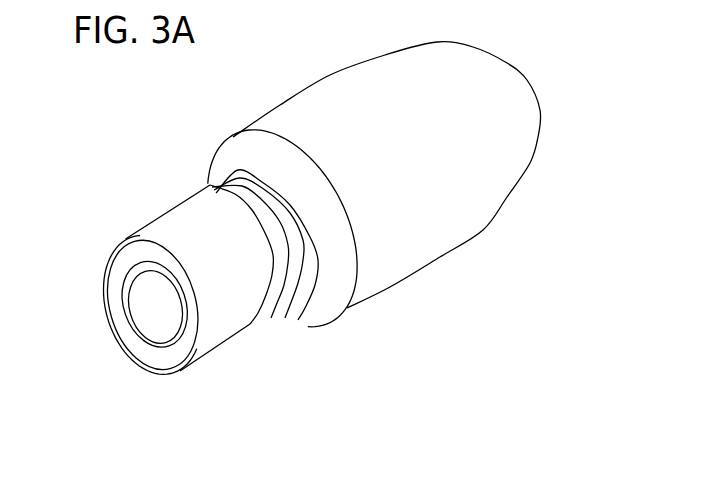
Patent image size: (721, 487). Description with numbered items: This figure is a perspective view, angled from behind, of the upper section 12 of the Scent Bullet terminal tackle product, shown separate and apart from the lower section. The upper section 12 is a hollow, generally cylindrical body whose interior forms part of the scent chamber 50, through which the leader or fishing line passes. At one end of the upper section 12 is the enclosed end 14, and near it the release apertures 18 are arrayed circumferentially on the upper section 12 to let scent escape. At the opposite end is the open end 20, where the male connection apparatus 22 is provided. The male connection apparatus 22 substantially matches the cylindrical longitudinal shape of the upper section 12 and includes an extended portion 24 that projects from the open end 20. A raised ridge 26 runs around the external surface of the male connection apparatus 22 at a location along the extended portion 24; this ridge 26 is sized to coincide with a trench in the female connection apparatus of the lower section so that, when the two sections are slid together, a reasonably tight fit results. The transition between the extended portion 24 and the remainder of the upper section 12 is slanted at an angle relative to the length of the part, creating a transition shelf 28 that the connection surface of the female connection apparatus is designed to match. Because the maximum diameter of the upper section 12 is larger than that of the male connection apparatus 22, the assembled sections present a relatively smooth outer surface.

The upper section 12 is at (328, 95).
The enclosed end 14 is at (546, 154).
The release apertures 18 is at (540, 96).
The open end 20 is at (108, 342).
The male connection apparatus 22 is at (141, 203).
The extended portion 24 is at (220, 323).
The raised ridge 26 is at (278, 313).
The transition shelf 28 is at (333, 305).
The scent chamber 50 is at (138, 298).